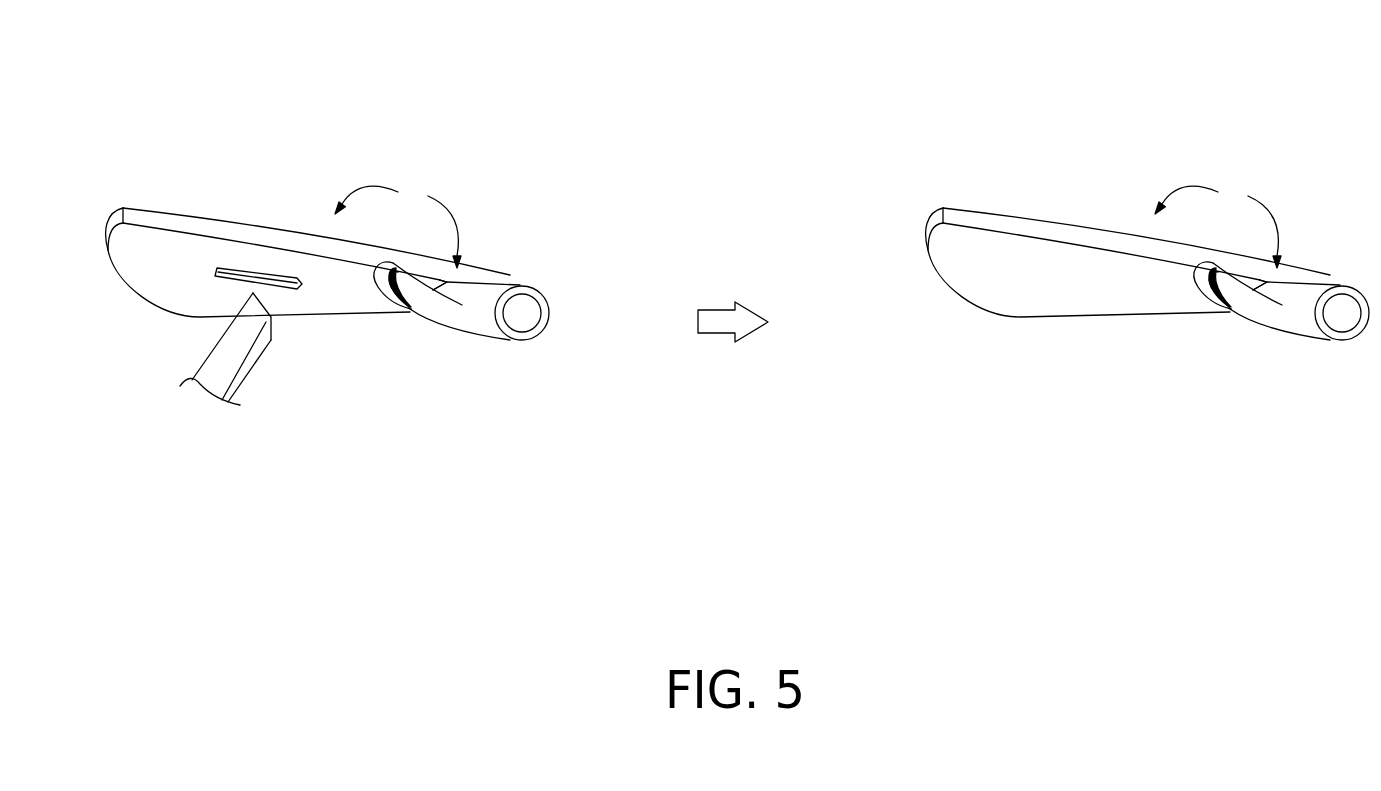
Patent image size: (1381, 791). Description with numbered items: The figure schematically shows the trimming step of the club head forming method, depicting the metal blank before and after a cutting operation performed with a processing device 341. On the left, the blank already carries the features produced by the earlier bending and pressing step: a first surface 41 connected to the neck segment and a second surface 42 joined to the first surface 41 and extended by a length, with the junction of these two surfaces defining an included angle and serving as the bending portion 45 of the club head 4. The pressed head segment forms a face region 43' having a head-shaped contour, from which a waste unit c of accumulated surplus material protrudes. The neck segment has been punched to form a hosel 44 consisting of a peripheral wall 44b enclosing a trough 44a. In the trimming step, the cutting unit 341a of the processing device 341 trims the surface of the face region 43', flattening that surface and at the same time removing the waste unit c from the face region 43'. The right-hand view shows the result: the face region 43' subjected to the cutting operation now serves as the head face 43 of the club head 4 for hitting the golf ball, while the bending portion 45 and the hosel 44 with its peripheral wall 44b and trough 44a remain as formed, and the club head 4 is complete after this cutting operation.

The club head 4 is at (119, 92).
The first surface 41 is at (447, 282).
The second surface 42 is at (903, 272).
The face region 43' is at (277, 262).
The head face 43 is at (1128, 308).
The hosel 44 is at (881, 373).
The trough 44a is at (519, 339).
The peripheral wall 44b is at (473, 322).
The bending portion 45 is at (385, 322).
The processing device 341 is at (203, 414).
The cutting unit 341a is at (241, 388).
The waste unit c is at (232, 270).